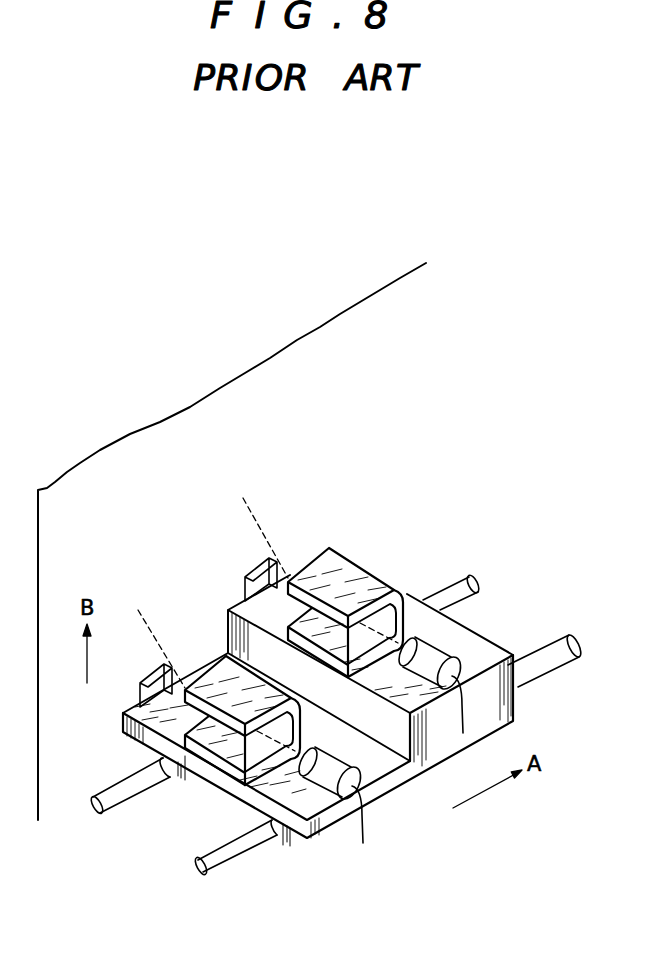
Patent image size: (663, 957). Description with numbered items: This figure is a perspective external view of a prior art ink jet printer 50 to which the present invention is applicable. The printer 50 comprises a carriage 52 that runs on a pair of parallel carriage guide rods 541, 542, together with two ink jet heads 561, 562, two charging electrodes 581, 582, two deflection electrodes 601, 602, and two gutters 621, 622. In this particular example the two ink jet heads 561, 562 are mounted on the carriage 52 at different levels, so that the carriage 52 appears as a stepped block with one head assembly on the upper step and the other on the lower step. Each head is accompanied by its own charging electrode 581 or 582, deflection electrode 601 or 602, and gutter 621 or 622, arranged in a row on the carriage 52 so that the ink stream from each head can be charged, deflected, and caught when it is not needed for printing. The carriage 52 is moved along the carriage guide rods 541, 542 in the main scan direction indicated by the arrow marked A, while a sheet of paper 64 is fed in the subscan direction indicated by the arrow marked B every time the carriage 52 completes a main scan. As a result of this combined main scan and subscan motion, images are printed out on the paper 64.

The printer 50 is at (479, 419).
The carriage 52 is at (447, 744).
The carriage guide rod 541 is at (543, 660).
The carriage guide rod 542 is at (447, 595).
The ink jet head 561 is at (456, 654).
The ink jet head 562 is at (344, 769).
The charging electrode 581 is at (418, 656).
The charging electrode 582 is at (324, 748).
The deflection electrode 601 is at (359, 572).
The deflection electrode 602 is at (224, 678).
The gutter 621 is at (242, 584).
The gutter 622 is at (141, 688).
The paper 64 is at (198, 414).